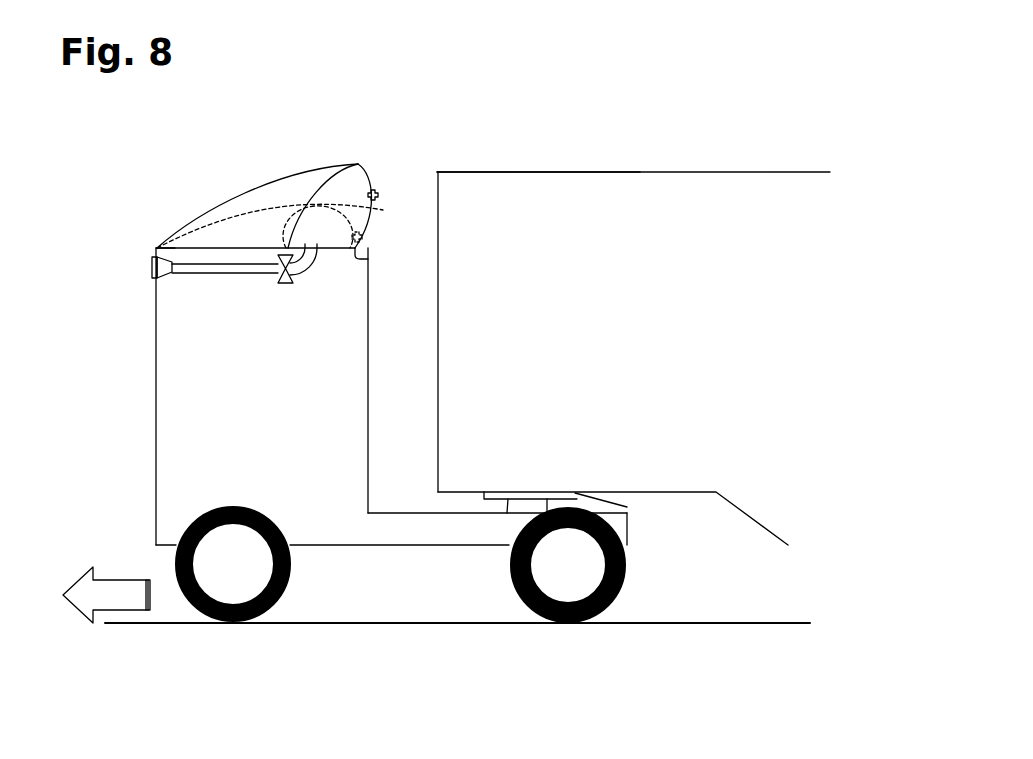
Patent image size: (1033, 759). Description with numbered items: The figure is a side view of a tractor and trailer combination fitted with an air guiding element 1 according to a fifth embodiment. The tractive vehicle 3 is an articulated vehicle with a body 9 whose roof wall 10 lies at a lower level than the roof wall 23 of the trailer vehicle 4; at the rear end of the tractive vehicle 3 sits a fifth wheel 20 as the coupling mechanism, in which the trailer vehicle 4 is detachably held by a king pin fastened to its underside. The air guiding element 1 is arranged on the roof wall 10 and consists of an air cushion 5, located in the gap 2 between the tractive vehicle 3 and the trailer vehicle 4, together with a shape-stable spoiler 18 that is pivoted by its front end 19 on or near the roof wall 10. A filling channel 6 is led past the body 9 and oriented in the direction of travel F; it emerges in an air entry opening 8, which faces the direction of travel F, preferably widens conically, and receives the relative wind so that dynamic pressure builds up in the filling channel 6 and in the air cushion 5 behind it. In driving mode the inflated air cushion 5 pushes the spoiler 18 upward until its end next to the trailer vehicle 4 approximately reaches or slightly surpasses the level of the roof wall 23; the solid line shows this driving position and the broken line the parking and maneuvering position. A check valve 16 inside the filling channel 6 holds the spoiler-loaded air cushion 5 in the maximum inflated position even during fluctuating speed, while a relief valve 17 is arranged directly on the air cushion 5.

The air guiding element 1 is at (440, 149).
The gap 2 is at (411, 380).
The tractive vehicle 3 is at (100, 445).
The trailer vehicle 4 is at (784, 140).
The air cushion 5 is at (343, 180).
The filling channel 6 is at (217, 273).
The air entry opening 8 is at (150, 265).
The body 9 is at (346, 463).
The roof wall 10 is at (368, 259).
The check valve 16 is at (286, 283).
The relief valve 17 is at (374, 192).
The shape-stable spoiler 18 is at (262, 187).
The front end 19 is at (157, 246).
The fifth wheel 20 is at (627, 507).
The roof wall 23 is at (600, 172).
The direction of travel F is at (82, 602).